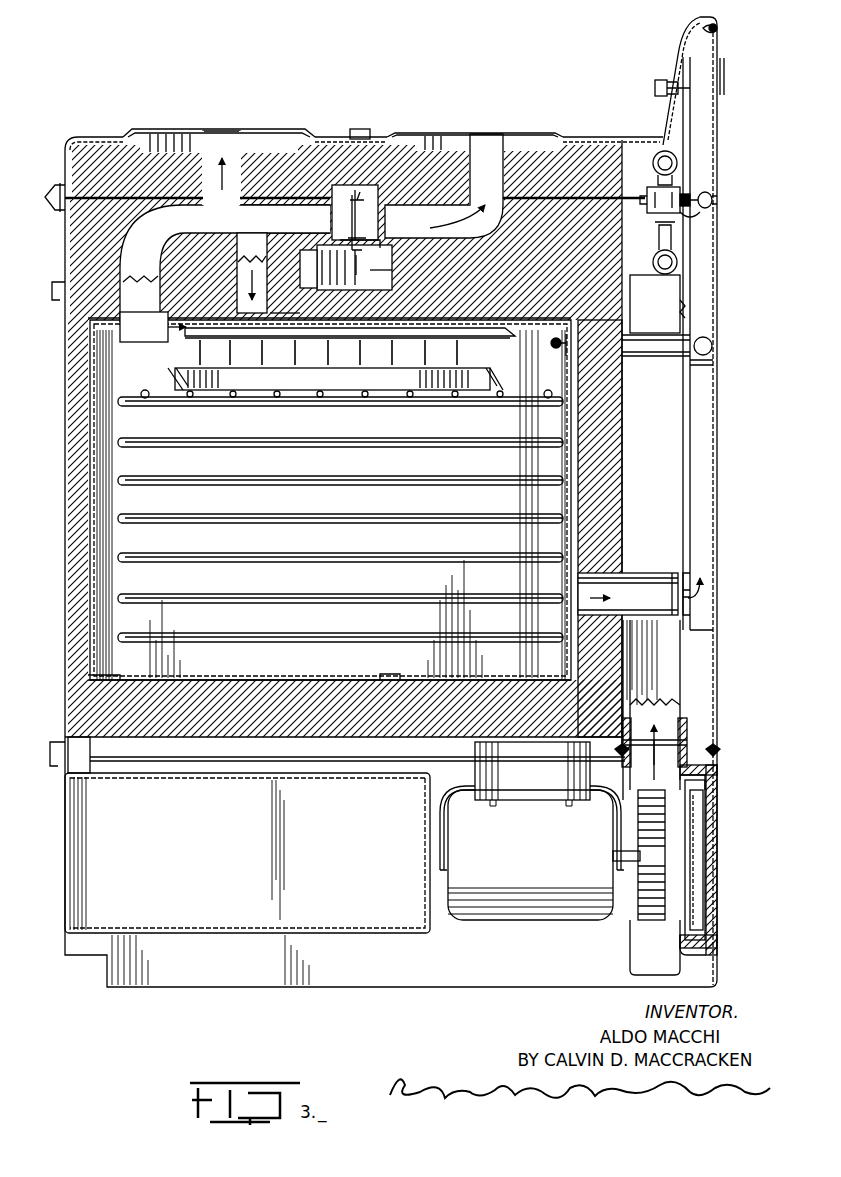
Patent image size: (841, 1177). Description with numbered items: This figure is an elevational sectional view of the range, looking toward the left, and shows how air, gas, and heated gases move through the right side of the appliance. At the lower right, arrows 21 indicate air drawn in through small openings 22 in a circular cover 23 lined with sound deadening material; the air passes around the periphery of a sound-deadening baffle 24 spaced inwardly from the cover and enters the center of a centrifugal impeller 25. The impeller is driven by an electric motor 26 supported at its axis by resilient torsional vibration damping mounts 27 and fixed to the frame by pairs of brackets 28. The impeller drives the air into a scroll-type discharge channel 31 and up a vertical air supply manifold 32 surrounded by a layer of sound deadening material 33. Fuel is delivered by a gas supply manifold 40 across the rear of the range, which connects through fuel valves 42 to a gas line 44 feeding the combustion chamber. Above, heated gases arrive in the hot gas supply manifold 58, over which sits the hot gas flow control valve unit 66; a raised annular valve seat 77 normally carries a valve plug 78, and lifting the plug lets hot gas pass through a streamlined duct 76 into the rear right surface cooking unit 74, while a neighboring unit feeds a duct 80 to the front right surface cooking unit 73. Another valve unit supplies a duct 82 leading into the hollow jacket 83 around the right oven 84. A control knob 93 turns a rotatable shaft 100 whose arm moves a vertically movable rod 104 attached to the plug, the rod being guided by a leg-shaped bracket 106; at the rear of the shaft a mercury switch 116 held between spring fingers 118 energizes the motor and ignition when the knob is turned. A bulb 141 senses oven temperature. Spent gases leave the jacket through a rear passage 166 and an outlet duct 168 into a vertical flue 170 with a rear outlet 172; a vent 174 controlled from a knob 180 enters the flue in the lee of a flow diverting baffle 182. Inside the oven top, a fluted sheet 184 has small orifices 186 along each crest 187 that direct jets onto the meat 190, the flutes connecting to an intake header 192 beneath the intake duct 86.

The arrows 21 is at (725, 868).
The small openings 22 is at (718, 862).
The circular cover 23 is at (717, 932).
The sound-deadening baffle 24 is at (705, 810).
The centrifugal impeller 25 is at (648, 920).
The electric motor 26 is at (508, 866).
The resilient torsional vibration damping mounts 27 is at (445, 888).
The brackets 28 is at (542, 778).
The scroll-type discharge channel 31 is at (640, 962).
The vertical air supply manifold 32 is at (643, 667).
The sound deadening material 33 is at (688, 740).
The gas supply manifold 40 is at (677, 268).
The fuel valves 42 is at (670, 198).
The gas line 44 is at (676, 160).
The hot gas supply manifold 58 is at (392, 271).
The hot gas flow control valve unit 66 is at (357, 190).
The front right surface cooking unit 73 is at (228, 118).
The rear right surface cooking unit 74 is at (472, 120).
The streamlined duct 76 is at (482, 226).
The raised annular valve seat 77 is at (384, 246).
The valve plug 78 is at (365, 228).
The duct 80 is at (263, 225).
The duct 82 is at (239, 267).
The hollow jacket 83 is at (290, 318).
The right oven 84 is at (312, 511).
The intake duct 86 is at (146, 241).
The control knob 93 is at (44, 198).
The rotatable shaft 100 is at (68, 168).
The vertically movable rod 104 is at (312, 268).
The leg-shaped bracket 106 is at (380, 280).
The mercury switch 116 is at (714, 200).
The spring fingers 118 is at (700, 190).
The bulb 141 is at (556, 350).
The rear passage 166 is at (585, 478).
The outlet duct 168 is at (650, 573).
The vertical flue 170 is at (700, 127).
The rear outlet 172 is at (725, 88).
The vent 174 is at (657, 356).
The knob 180 is at (665, 83).
The flow diverting baffle 182 is at (703, 368).
The fluted sheet 184 is at (498, 336).
The small orifices 186 is at (480, 348).
The crest 187 is at (450, 330).
The meat 190 is at (278, 388).
The intake header 192 is at (154, 345).